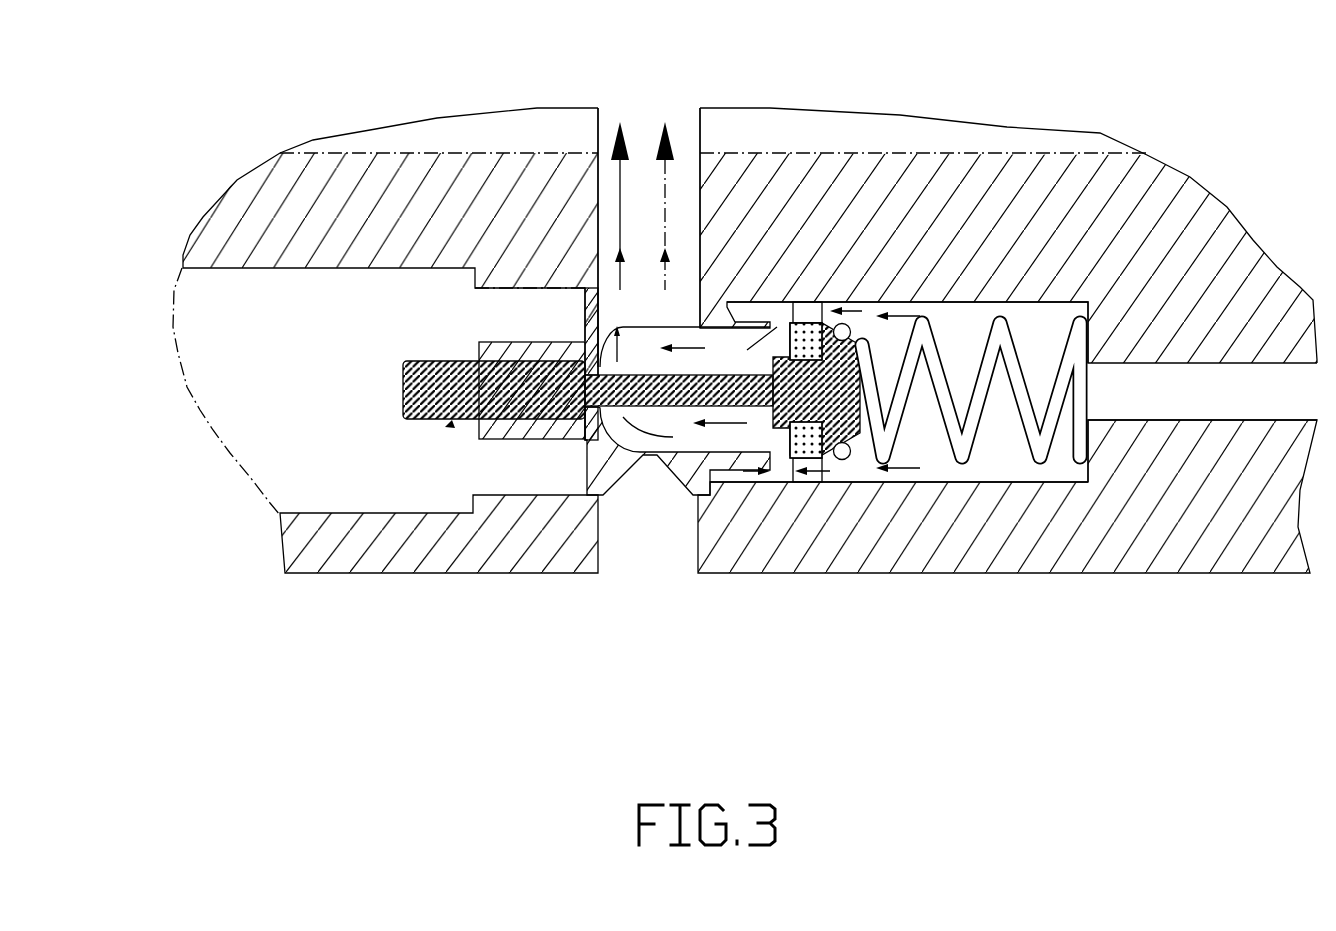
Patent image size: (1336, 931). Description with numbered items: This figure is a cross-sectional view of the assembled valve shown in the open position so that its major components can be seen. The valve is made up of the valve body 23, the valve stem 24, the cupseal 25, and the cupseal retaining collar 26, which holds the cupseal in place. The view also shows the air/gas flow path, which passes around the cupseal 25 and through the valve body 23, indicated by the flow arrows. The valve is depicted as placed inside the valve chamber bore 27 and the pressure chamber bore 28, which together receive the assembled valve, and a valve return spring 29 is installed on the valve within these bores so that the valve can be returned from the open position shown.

The valve body 23 is at (585, 310).
The valve stem 24 is at (400, 413).
The cupseal 25 is at (808, 330).
The cupseal retaining collar 26 is at (775, 440).
The valve chamber bore 27 is at (585, 285).
The pressure chamber bore 28 is at (937, 305).
The valve return spring 29 is at (1033, 297).